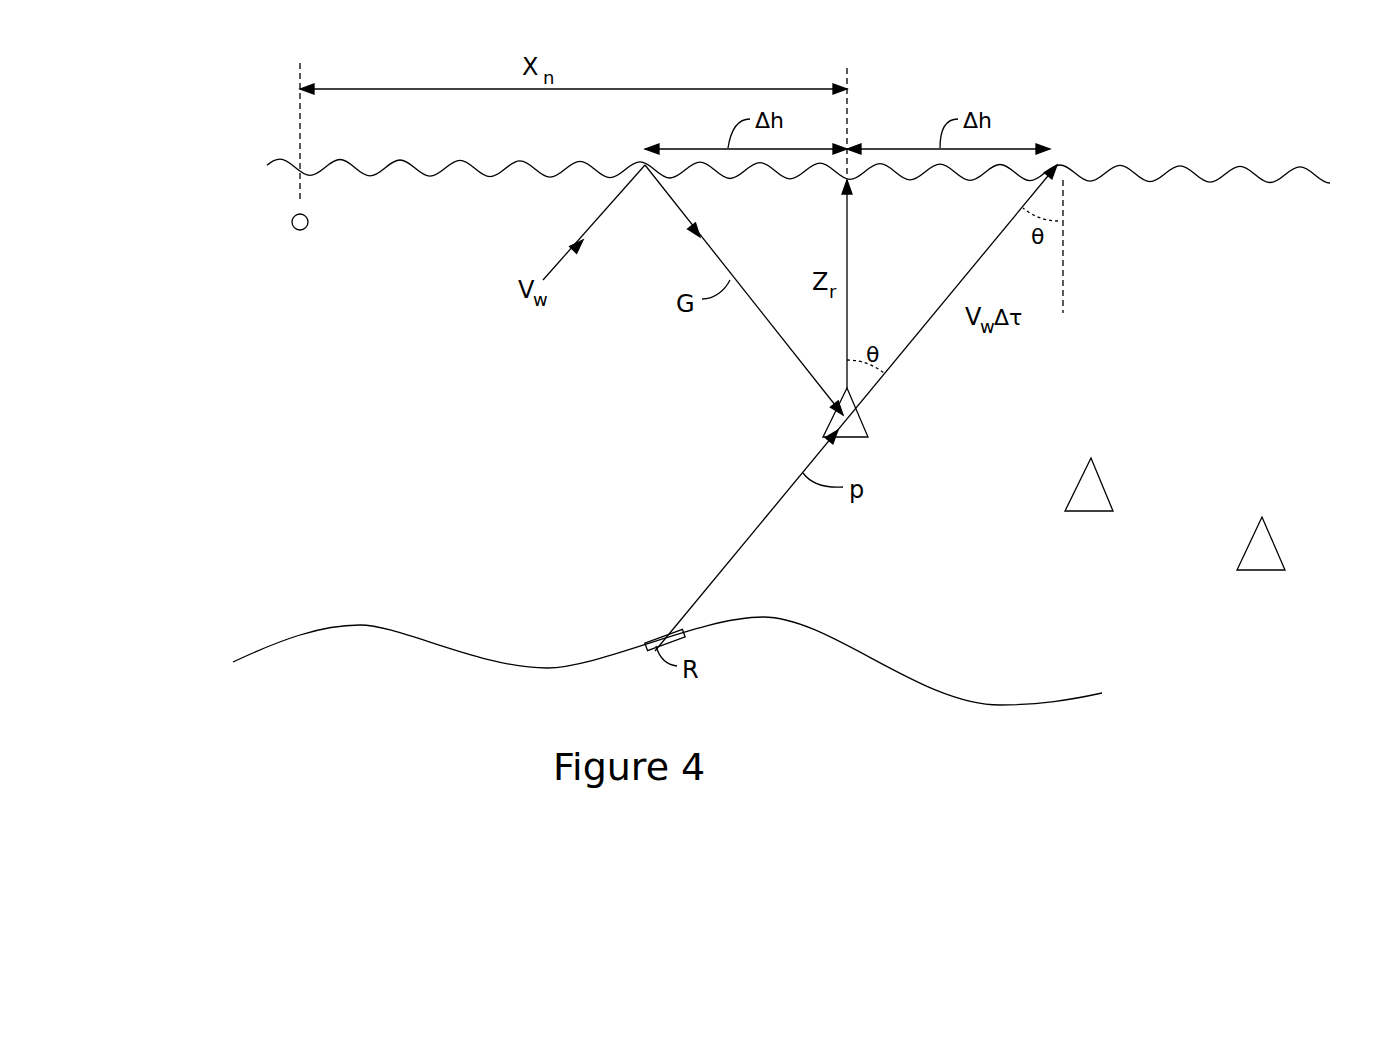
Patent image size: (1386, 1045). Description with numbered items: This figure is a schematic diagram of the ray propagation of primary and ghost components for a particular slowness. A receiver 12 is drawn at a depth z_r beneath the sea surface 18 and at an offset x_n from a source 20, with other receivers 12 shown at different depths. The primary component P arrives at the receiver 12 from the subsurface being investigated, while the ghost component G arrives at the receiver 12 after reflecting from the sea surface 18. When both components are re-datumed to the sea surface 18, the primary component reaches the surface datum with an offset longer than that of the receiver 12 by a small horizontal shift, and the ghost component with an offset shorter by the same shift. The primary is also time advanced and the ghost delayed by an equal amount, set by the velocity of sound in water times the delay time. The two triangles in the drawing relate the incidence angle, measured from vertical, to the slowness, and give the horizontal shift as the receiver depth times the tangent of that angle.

The receiver 12 is at (868, 428).
The sea surface 18 is at (1180, 167).
The source 20 is at (293, 228).